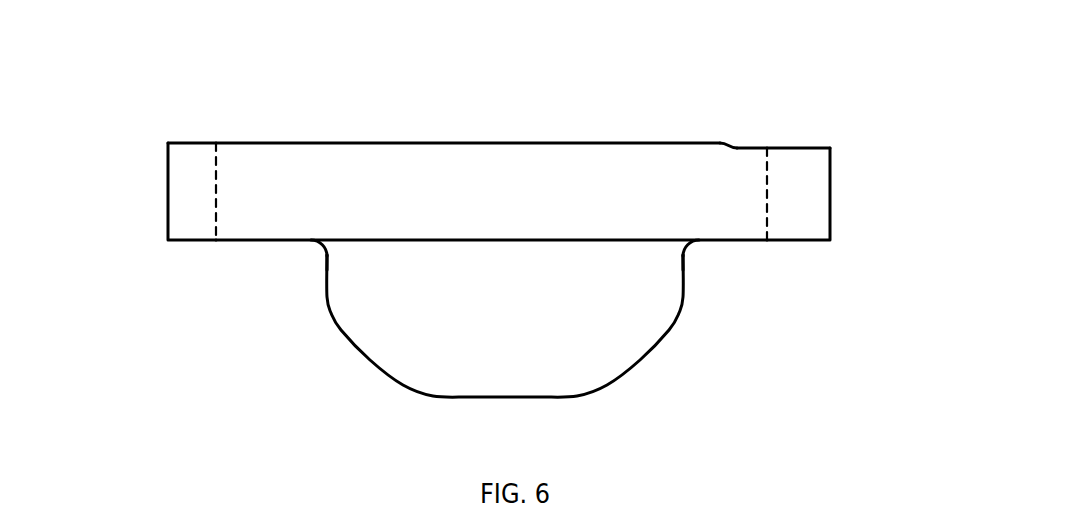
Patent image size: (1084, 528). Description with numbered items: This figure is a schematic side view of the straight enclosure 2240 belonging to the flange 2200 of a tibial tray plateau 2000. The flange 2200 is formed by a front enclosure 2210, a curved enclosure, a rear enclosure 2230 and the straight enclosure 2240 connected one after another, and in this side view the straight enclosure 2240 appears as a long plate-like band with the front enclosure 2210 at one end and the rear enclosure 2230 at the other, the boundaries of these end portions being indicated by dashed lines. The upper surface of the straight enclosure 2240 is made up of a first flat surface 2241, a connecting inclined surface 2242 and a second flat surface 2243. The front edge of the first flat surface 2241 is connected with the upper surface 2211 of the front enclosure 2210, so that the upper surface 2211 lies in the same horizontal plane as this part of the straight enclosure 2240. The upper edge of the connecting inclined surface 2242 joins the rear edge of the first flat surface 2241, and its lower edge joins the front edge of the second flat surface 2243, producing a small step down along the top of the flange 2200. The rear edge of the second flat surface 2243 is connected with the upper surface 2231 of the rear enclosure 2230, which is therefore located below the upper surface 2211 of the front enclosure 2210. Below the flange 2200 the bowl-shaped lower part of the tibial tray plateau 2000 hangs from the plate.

The tibial tray plateau 2000 is at (457, 242).
The flange 2200 is at (613, 207).
The front enclosure 2210 is at (187, 160).
The upper surface of the front enclosure 2211 is at (198, 143).
The rear enclosure 2230 is at (810, 205).
The upper surface of the rear enclosure 2231 is at (808, 148).
The straight enclosure 2240 is at (387, 178).
The first flat surface 2241 is at (472, 143).
The connecting inclined surface 2242 is at (730, 145).
The second flat surface 2243 is at (747, 148).